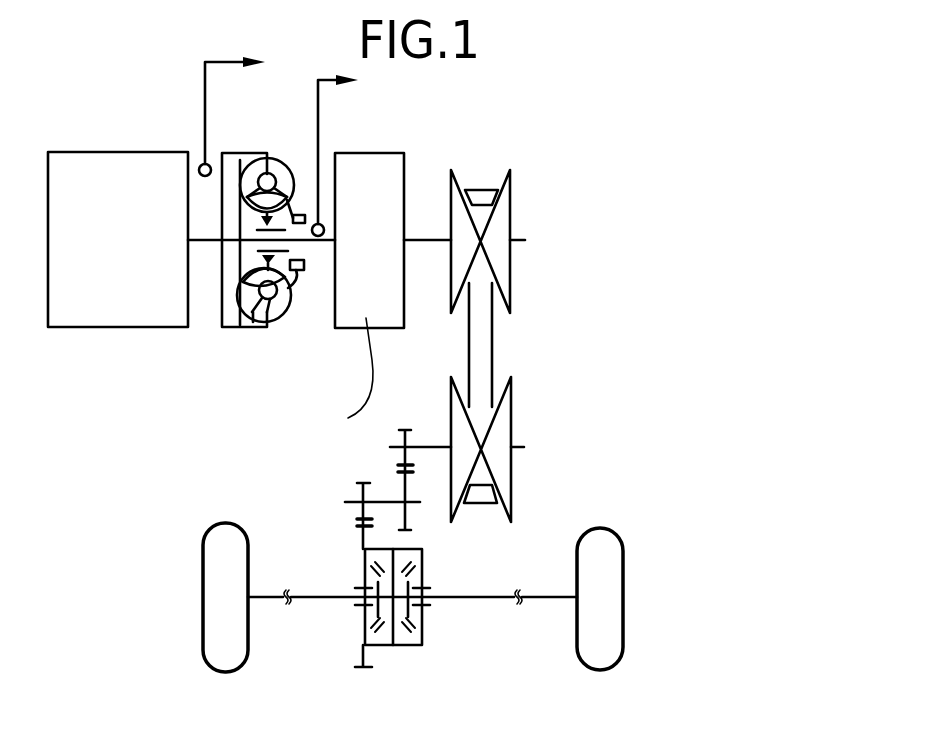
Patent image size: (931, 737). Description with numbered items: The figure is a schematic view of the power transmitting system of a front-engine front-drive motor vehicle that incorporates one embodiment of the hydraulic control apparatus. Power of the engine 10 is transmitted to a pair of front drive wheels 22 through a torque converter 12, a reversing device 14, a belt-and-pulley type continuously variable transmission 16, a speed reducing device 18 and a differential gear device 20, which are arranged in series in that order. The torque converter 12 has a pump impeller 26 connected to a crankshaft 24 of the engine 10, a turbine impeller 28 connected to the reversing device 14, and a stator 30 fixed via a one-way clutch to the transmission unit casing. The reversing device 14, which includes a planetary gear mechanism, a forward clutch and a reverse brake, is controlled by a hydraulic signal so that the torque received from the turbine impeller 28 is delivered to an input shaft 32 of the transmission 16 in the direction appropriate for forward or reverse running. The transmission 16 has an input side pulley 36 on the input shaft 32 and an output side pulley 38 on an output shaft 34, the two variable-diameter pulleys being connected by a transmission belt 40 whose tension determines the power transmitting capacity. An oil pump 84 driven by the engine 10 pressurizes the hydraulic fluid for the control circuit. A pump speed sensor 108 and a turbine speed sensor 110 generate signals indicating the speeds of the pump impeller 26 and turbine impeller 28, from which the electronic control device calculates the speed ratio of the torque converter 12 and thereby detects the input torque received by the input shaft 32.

The engine 10 is at (84, 160).
The torque converter 12 is at (262, 135).
The reversing device 14 is at (376, 135).
The belt-and-pulley type continuously variable transmission 16 is at (489, 306).
The speed reducing device 18 is at (322, 500).
The differential gear device 20 is at (393, 672).
The front drive wheels 22 is at (227, 662).
The crankshaft 24 is at (203, 243).
The pump impeller 26 is at (280, 312).
The turbine impeller 28 is at (243, 312).
The stator 30 is at (253, 322).
The input shaft 32 is at (427, 243).
The output shaft 34 is at (520, 445).
The input side pulley 36 is at (505, 220).
The output side pulley 38 is at (502, 418).
The transmission belt 40 is at (487, 348).
The oil pump 84 is at (297, 272).
The pump speed sensor 108 is at (201, 166).
The turbine speed sensor 110 is at (316, 225).